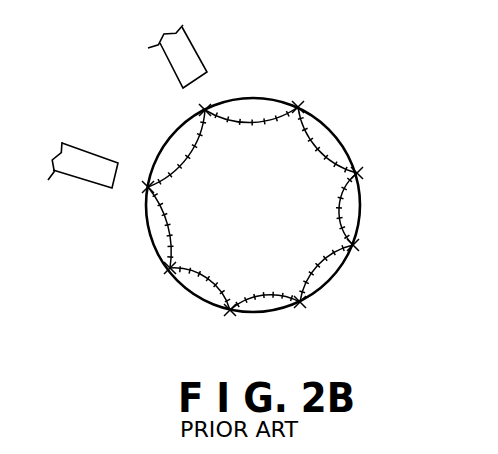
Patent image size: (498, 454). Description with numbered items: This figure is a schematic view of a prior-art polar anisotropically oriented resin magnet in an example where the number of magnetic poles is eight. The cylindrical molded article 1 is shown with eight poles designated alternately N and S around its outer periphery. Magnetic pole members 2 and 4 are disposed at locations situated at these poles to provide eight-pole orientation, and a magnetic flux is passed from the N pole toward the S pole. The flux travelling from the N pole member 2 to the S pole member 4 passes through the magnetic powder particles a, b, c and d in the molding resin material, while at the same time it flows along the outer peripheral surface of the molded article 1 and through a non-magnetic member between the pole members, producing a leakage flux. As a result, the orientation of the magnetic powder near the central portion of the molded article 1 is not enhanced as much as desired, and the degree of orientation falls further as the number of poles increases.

The molded article 1 is at (247, 220).
The N pole member 2 is at (90, 180).
The S pole member 4 is at (193, 50).